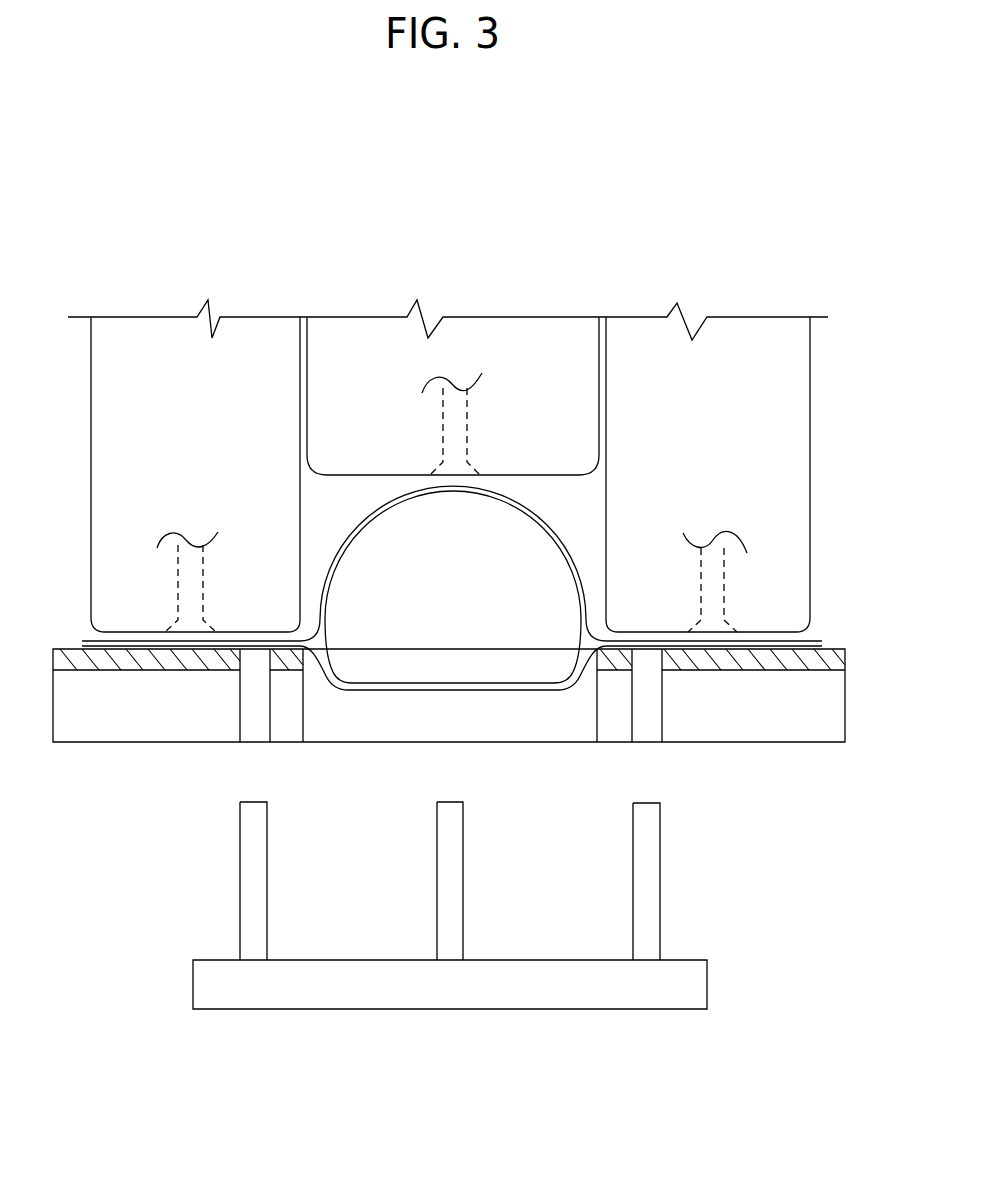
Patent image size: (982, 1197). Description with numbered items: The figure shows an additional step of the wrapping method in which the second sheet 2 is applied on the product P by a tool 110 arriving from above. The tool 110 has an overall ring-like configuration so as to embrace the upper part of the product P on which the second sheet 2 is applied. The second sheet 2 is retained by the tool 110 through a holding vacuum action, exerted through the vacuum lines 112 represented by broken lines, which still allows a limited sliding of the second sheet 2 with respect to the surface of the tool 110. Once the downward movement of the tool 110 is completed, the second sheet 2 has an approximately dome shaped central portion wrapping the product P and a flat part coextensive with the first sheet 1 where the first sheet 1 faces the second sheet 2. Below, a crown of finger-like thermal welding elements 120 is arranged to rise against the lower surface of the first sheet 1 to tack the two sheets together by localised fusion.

The tool 110 is at (557, 352).
The vacuum lines 112 is at (206, 570).
The second sheet 2 is at (368, 517).
The first sheet 1 is at (497, 692).
The product P is at (417, 635).
The finger-like thermal welding elements 120 is at (267, 858).